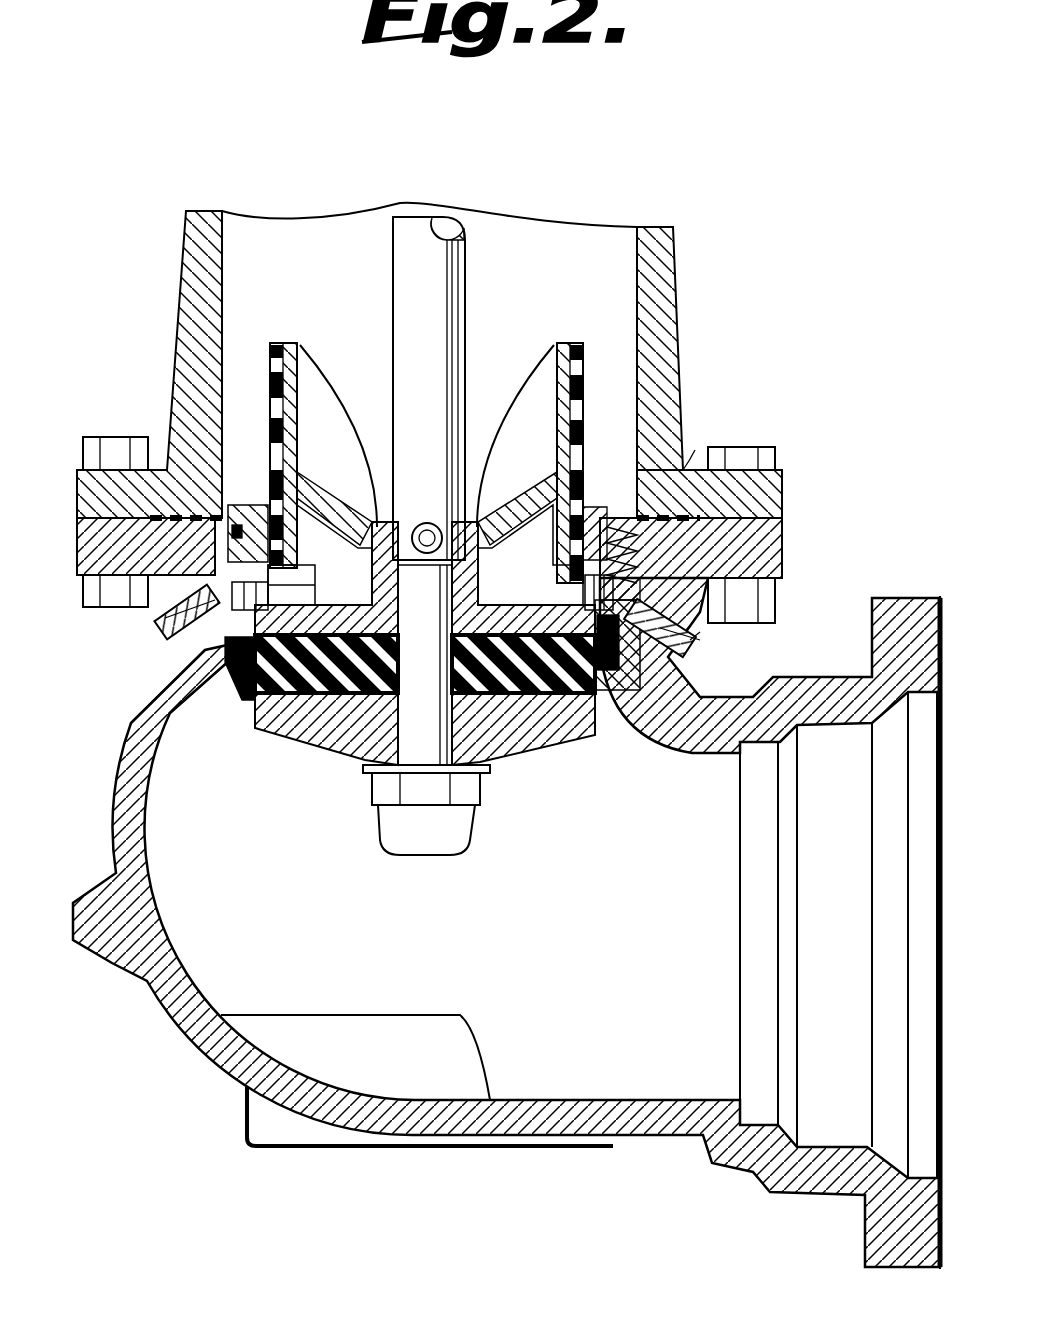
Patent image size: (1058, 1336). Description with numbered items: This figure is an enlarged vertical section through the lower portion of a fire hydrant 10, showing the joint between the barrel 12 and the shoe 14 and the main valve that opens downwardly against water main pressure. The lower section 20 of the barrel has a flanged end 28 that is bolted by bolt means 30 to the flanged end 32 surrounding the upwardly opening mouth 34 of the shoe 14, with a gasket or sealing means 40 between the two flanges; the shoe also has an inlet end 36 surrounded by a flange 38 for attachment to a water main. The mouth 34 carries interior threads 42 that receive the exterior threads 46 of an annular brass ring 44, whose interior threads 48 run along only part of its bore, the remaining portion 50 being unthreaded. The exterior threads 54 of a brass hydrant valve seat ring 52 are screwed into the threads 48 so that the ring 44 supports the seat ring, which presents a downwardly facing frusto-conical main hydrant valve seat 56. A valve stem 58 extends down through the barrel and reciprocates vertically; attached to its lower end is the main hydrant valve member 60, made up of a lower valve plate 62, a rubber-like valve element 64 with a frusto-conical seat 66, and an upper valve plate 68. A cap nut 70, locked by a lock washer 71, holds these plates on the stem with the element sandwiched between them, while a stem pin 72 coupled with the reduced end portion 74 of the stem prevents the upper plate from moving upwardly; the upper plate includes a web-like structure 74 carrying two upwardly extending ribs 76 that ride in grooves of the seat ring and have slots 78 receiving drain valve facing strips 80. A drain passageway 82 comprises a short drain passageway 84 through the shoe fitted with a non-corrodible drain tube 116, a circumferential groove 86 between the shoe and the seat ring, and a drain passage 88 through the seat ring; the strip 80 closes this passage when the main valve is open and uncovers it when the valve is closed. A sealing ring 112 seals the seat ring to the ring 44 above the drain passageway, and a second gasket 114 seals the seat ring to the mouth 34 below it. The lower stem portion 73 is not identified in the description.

The fire hydrant 10 is at (700, 358).
The barrel 12 is at (672, 262).
The shoe 14 is at (198, 1045).
The lower section 20 is at (678, 320).
The flanged end 28 is at (785, 498).
The bolt means 30 is at (772, 449).
The flanged end 32 is at (785, 548).
The upwardly opening mouth 34 is at (215, 668).
The inlet end 36 is at (880, 862).
The flange 38 is at (905, 598).
The gasket or sealing means 40 is at (690, 470).
The interior threads 42 is at (122, 600).
The annular brass ring 44 is at (235, 530).
The exterior threads 46 is at (77, 582).
The interior threads 48 is at (300, 556).
The unthreaded portion 50 is at (612, 530).
The hydrant valve seat ring 52 is at (598, 507).
The exterior threads 54 is at (650, 562).
The main hydrant valve seat 56 is at (250, 692).
The valve stem 58 is at (462, 300).
The main hydrant valve member 60 is at (545, 748).
The lower valve plate 62 is at (320, 737).
The valve element 64 is at (612, 668).
The frusto-conical seat 66 is at (540, 738).
The upper valve plate 68 is at (520, 605).
The cap nut 70 is at (476, 824).
The lock washer 71 is at (365, 767).
The stem pin 72 is at (440, 525).
The stem lower portion 73 is at (425, 605).
The web-like structure 74 is at (333, 500).
The ribs 76 is at (315, 362).
The slots 78 is at (290, 343).
The drain valve facing strips 80 is at (270, 360).
The drain passageway 82 is at (700, 640).
The drain passageway 84 is at (185, 632).
The circumferential groove 86 is at (140, 665).
The drain passage 88 is at (270, 592).
The sealing ring 112 is at (615, 560).
The second gasket 114 is at (680, 655).
The drain tube 116 is at (700, 632).